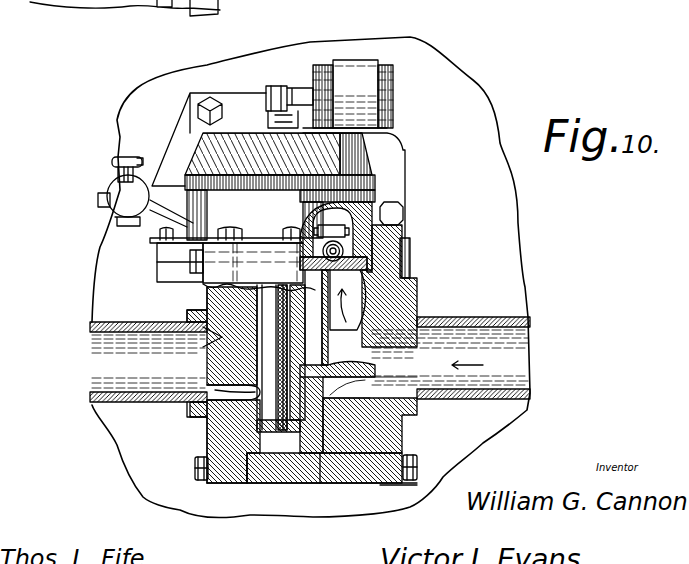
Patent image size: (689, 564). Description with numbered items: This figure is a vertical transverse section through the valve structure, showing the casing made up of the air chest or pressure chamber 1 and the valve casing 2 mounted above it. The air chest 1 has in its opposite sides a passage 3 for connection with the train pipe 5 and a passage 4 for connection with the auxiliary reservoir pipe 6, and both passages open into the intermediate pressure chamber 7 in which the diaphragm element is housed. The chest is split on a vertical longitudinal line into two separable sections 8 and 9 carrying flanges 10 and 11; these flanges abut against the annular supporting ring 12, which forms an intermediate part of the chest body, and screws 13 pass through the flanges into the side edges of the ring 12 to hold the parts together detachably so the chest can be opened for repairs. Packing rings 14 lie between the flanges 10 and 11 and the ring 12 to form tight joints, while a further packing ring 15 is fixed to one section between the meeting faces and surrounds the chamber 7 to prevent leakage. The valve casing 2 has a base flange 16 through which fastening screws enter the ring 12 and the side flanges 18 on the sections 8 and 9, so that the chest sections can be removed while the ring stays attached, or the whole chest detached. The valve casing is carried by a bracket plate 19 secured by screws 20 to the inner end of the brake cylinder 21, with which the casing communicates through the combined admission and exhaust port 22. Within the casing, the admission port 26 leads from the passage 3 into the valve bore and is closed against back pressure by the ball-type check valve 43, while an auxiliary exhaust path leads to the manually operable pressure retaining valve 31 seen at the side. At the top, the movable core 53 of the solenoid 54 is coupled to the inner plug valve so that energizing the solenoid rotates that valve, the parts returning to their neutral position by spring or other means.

The air chest 1 is at (205, 429).
The valve casing 2 is at (350, 176).
The passage 3 is at (407, 427).
The passage 4 is at (235, 388).
The train pipe 5 is at (515, 363).
The auxiliary reservoir pipe 6 is at (110, 320).
The intermediate pressure chamber 7 is at (330, 484).
The chest section 8 is at (203, 295).
The chest section 9 is at (375, 300).
The flange 10 is at (205, 448).
The flange 11 is at (402, 486).
The supporting ring 12 is at (273, 472).
The screws 13 is at (210, 478).
The packing rings 14 is at (362, 483).
The packing ring 15 is at (332, 462).
The flange 16 is at (345, 252).
The side flanges 18 is at (157, 268).
The bracket plate 19 is at (243, 99).
The screws 20 is at (208, 109).
The brake cylinder 21 is at (458, 91).
The combined admission and exhaust port 22 is at (313, 398).
The admission port 26 is at (338, 232).
The pressure retaining valve 31 is at (108, 192).
The check valve 43 is at (382, 208).
The solenoid core 53 is at (303, 88).
The solenoid 54 is at (346, 72).